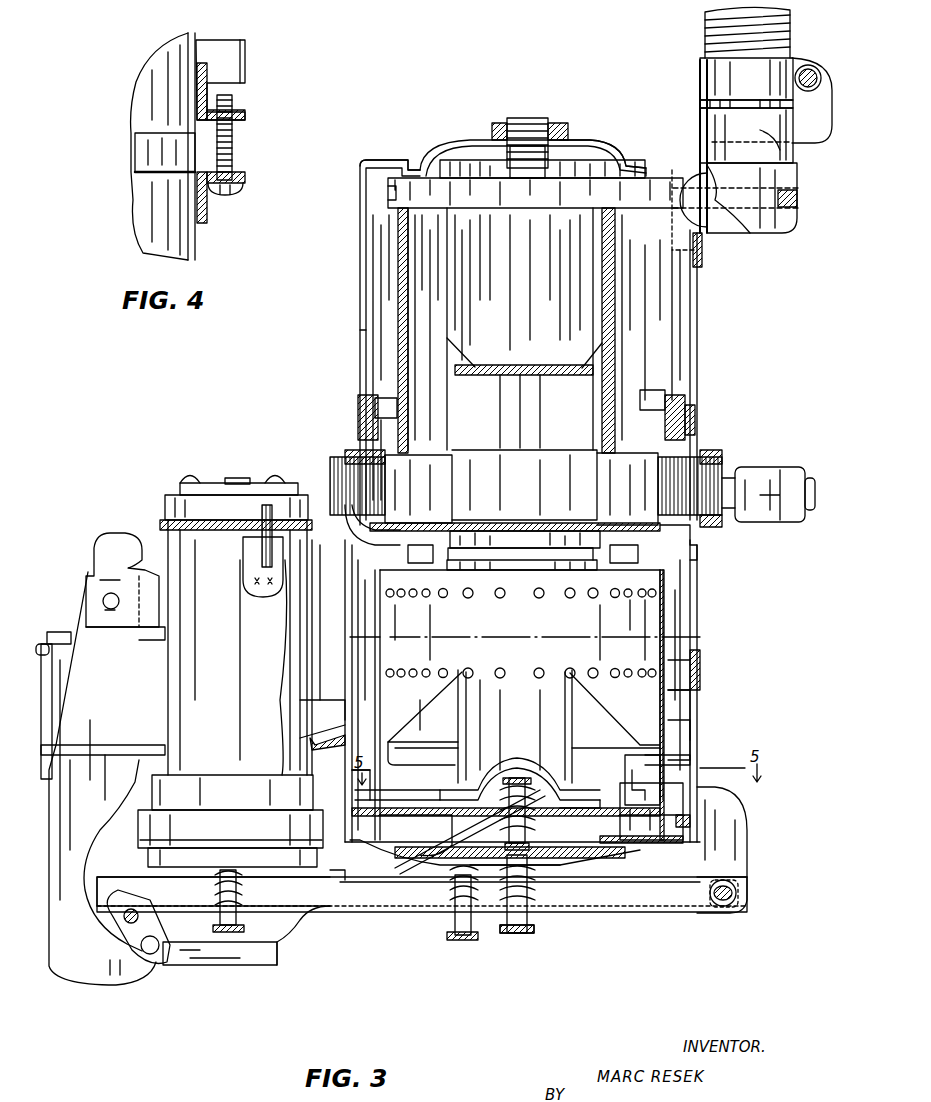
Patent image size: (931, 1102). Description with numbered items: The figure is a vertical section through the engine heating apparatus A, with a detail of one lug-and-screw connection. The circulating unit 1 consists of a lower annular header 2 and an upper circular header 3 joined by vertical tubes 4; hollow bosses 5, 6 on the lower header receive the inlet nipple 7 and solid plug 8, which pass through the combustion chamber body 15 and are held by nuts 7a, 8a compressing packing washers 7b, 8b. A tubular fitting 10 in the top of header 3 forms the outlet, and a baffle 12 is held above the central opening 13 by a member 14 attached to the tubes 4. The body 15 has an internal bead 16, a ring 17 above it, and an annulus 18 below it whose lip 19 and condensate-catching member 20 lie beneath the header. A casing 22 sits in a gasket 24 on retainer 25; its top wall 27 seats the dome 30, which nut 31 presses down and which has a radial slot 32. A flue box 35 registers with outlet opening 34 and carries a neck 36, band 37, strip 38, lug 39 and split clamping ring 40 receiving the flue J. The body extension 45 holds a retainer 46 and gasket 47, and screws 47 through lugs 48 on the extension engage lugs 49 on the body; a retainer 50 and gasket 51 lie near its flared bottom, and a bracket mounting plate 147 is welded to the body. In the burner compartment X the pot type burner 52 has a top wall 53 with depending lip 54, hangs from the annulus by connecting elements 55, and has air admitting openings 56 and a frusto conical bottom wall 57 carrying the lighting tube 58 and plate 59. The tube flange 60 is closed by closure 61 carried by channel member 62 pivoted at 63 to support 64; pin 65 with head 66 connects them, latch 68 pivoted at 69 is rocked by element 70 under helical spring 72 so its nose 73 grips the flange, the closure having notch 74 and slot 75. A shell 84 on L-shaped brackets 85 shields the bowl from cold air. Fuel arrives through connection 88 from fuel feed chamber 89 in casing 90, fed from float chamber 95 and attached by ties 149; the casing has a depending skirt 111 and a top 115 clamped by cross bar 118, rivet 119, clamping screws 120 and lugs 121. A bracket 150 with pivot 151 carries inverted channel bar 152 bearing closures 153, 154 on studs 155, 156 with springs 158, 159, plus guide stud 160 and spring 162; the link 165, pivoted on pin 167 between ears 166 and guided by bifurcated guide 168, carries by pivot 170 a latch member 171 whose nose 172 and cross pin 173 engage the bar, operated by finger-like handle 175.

In FIG. 4, the combustion chamber body 15 is at (165, 58).
In FIG. 3, the combustion chamber body 15 is at (697, 603).
In FIG. 4, the cylindrical body extension 45 is at (145, 192).
In FIG. 3, the cylindrical body extension 45 is at (697, 730).
In FIG. 4, the bracket mounting plate 147 is at (245, 56).
In FIG. 3, the bracket mounting plate 147 is at (340, 612).
In FIG. 4, the lugs on body 49 is at (245, 112).
In FIG. 4, the screws 47 is at (232, 140).
In FIG. 3, the screws 47 is at (700, 680).
In FIG. 4, the lugs on extension 48 is at (245, 180).
In FIG. 3, the heating apparatus A is at (354, 238).
In FIG. 3, the annular top wall 27 is at (404, 162).
In FIG. 3, the radial slot 32 is at (450, 146).
In FIG. 3, the dome 30 is at (600, 146).
In FIG. 3, the tubular fitting 10 is at (540, 118).
In FIG. 3, the nut 31 is at (500, 123).
In FIG. 3, the upper circular header 3 is at (400, 197).
In FIG. 3, the circulating unit 1 is at (398, 298).
In FIG. 3, the cylindrical casing 22 is at (360, 333).
In FIG. 3, the vertical tubes 4 is at (410, 360).
In FIG. 3, the supporting member 14 is at (505, 365).
In FIG. 3, the baffle 12 is at (530, 378).
In FIG. 3, the ring-like retainer 25 is at (670, 395).
In FIG. 3, the gasket 24 is at (696, 418).
In FIG. 3, the hollow boss 6 is at (375, 455).
In FIG. 3, the nut 8a is at (345, 457).
In FIG. 3, the solid threaded plug 8 is at (330, 478).
In FIG. 3, the hollow boss 5 is at (672, 470).
In FIG. 3, the nut 7a is at (715, 458).
In FIG. 3, the nipple 7 is at (728, 475).
In FIG. 3, the packing washer 7b is at (710, 527).
In FIG. 3, the lower annular header 2 is at (440, 482).
In FIG. 3, the central opening 13 is at (560, 473).
In FIG. 3, the connecting elements 55 is at (620, 480).
In FIG. 3, the ring 17 is at (405, 530).
In FIG. 3, the ring-like member 20 is at (505, 535).
In FIG. 3, the lip 19 is at (575, 551).
In FIG. 3, the internal bead 16 is at (408, 550).
In FIG. 3, the packing washer 8b is at (365, 528).
In FIG. 3, the annular top wall 53 is at (625, 548).
In FIG. 3, the annulus 18 is at (697, 560).
In FIG. 3, the air admitting openings 56 is at (670, 598).
In FIG. 3, the depending lip 54 is at (615, 593).
In FIG. 3, the pot type burner 52 is at (668, 625).
In FIG. 3, the burner compartment X is at (680, 660).
In FIG. 3, the lighting tube 58 is at (510, 680).
In FIG. 3, the frusto conical bottom wall 57 is at (416, 725).
In FIG. 3, the plate 59 is at (420, 748).
In FIG. 3, the nose of latch 73 is at (490, 760).
In FIG. 3, the closure 61 is at (490, 790).
In FIG. 3, the helical spring 72 is at (485, 785).
In FIG. 3, the outwardly extending flange 60 is at (590, 790).
In FIG. 3, the support 64 is at (625, 775).
In FIG. 3, the latch 68 is at (450, 810).
In FIG. 3, the slot 75 is at (425, 795).
In FIG. 3, the shell 84 is at (380, 770).
In FIG. 3, the notch 74 is at (575, 800).
In FIG. 3, the head of pin 66 is at (505, 843).
In FIG. 3, the pivot 69 is at (455, 820).
In FIG. 3, the rocker element 70 is at (475, 830).
In FIG. 3, the channel member 62 is at (578, 820).
In FIG. 3, the pin 65 is at (498, 848).
In FIG. 3, the pivot 63 is at (610, 830).
In FIG. 3, the ring-like retainer 50 is at (655, 820).
In FIG. 3, the gasket 51 is at (690, 820).
In FIG. 3, the retainer 46 is at (685, 688).
In FIG. 3, the L-shaped bracket 85 is at (697, 758).
In FIG. 3, the inverted channel bar 152 is at (620, 912).
In FIG. 3, the circular closure 153 is at (640, 882).
In FIG. 3, the circular closure 154 is at (352, 877).
In FIG. 3, the spring 158 is at (528, 890).
In FIG. 3, the spring 162 is at (487, 915).
In FIG. 3, the stud 155 is at (534, 925).
In FIG. 3, the guide stud 160 is at (455, 920).
In FIG. 3, the cylindrical casing 90 is at (200, 650).
In FIG. 3, the top 115 is at (250, 506).
In FIG. 3, the cross bar 118 is at (252, 485).
In FIG. 3, the rivet 119 is at (234, 478).
In FIG. 3, the clamping screws 120 is at (208, 480).
In FIG. 3, the lugs 121 is at (250, 560).
In FIG. 3, the fuel feed chamber 89 is at (292, 597).
In FIG. 3, the ties 149 is at (308, 700).
In FIG. 3, the tubular connection 88 is at (342, 718).
In FIG. 3, the depending skirt 111 is at (248, 827).
In FIG. 3, the spring 159 is at (242, 893).
In FIG. 3, the stud 156 is at (240, 920).
In FIG. 3, the nose 172 is at (128, 891).
In FIG. 3, the cross pin 173 is at (138, 912).
In FIG. 3, the pivot 170 is at (141, 945).
In FIG. 3, the latch member 171 is at (200, 965).
In FIG. 3, the finger-like handle 175 is at (300, 930).
In FIG. 3, the link 165 is at (106, 820).
In FIG. 3, the bifurcated guide 168 is at (76, 748).
In FIG. 3, the float chamber 95 is at (50, 640).
In FIG. 3, the pin 167 is at (105, 595).
In FIG. 3, the ears 166 is at (160, 632).
In FIG. 3, the bracket 150 is at (740, 838).
In FIG. 3, the pivot 151 is at (736, 893).
In FIG. 3, the flue J is at (705, 28).
In FIG. 3, the split clamping ring 40 is at (735, 70).
In FIG. 3, the strip 38 is at (704, 104).
In FIG. 3, the neck 36 is at (712, 140).
In FIG. 3, the lug 39 is at (808, 130).
In FIG. 3, the band 37 is at (782, 148).
In FIG. 3, the flue box 35 is at (770, 233).
In FIG. 3, the outlet opening 34 is at (702, 240).